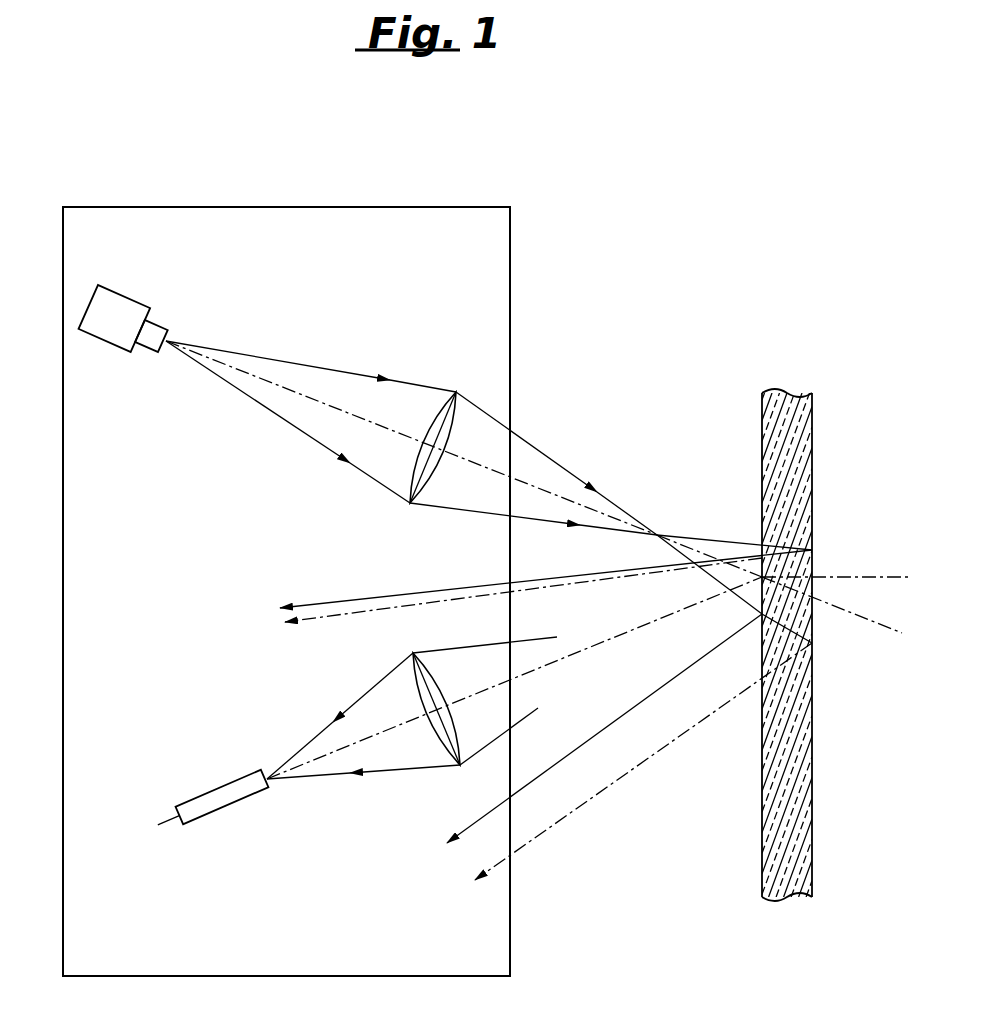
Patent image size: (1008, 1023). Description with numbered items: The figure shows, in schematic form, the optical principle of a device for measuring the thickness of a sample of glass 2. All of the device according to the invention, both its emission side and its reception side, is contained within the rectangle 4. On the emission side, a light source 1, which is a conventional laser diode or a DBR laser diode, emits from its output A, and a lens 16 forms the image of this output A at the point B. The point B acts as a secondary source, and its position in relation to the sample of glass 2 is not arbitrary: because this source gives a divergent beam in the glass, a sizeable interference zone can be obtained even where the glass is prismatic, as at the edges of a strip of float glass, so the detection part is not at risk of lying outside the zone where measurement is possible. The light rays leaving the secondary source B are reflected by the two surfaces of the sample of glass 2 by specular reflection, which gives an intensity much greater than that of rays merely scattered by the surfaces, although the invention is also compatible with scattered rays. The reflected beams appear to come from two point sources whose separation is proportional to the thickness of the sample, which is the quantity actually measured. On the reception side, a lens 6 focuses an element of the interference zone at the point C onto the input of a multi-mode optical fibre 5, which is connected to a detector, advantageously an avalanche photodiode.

The light source 1 is at (118, 309).
The sample of glass 2 is at (813, 446).
The rectangle 4 is at (247, 206).
The multi-mode optical fibre 5 is at (195, 804).
The lens 6 is at (423, 690).
The lens 16 is at (438, 420).
The output of the light source A is at (172, 338).
The secondary source B is at (658, 532).
The focus point C is at (270, 782).